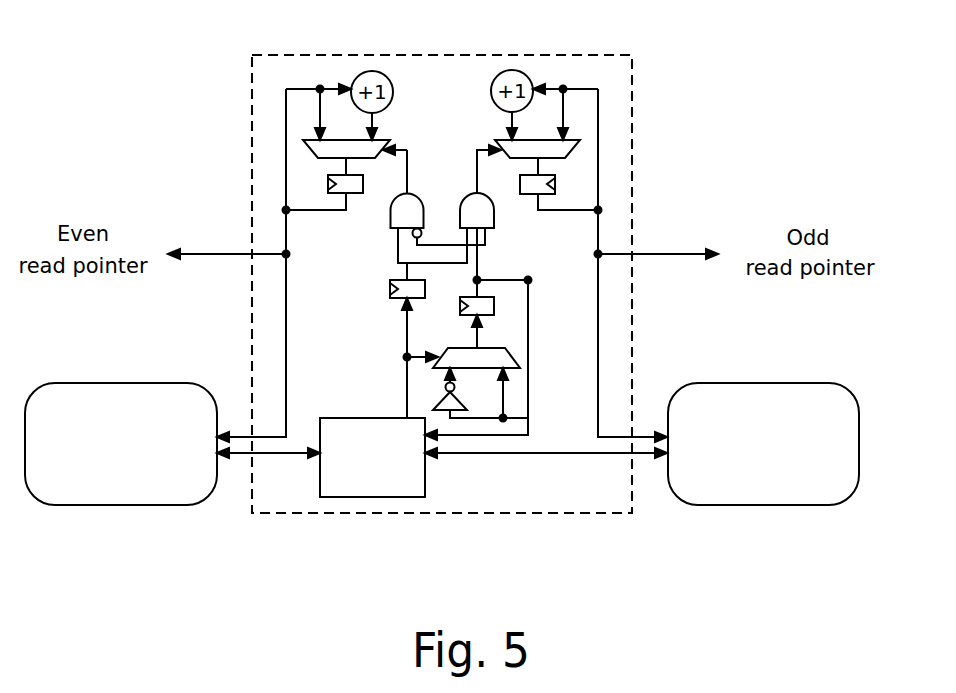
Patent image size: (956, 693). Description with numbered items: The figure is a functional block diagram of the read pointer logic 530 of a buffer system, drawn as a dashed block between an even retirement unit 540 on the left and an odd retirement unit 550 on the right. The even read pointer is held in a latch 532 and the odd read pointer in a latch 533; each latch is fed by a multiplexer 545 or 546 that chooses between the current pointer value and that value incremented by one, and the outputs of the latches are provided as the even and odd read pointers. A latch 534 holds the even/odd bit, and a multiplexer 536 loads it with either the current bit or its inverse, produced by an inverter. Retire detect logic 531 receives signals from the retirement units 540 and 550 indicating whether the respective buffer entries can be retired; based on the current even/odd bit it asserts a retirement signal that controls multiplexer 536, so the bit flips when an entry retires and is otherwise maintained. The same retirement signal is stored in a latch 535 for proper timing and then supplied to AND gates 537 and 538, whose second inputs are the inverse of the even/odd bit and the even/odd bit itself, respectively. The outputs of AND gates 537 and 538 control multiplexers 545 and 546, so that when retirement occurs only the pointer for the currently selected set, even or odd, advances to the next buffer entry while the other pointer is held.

The read pointer logic 530 is at (635, 100).
The retire detect logic 531 is at (372, 497).
The latch 532 is at (327, 183).
The latch 533 is at (557, 183).
The latch 534 is at (490, 293).
The latch 535 is at (390, 303).
The multiplexer 536 is at (515, 350).
The AND gate 537 is at (390, 222).
The AND gate 538 is at (462, 197).
The even retirement unit 540 is at (87, 382).
The multiplexer 545 is at (307, 150).
The multiplexer 546 is at (580, 150).
The odd retirement unit 550 is at (720, 380).